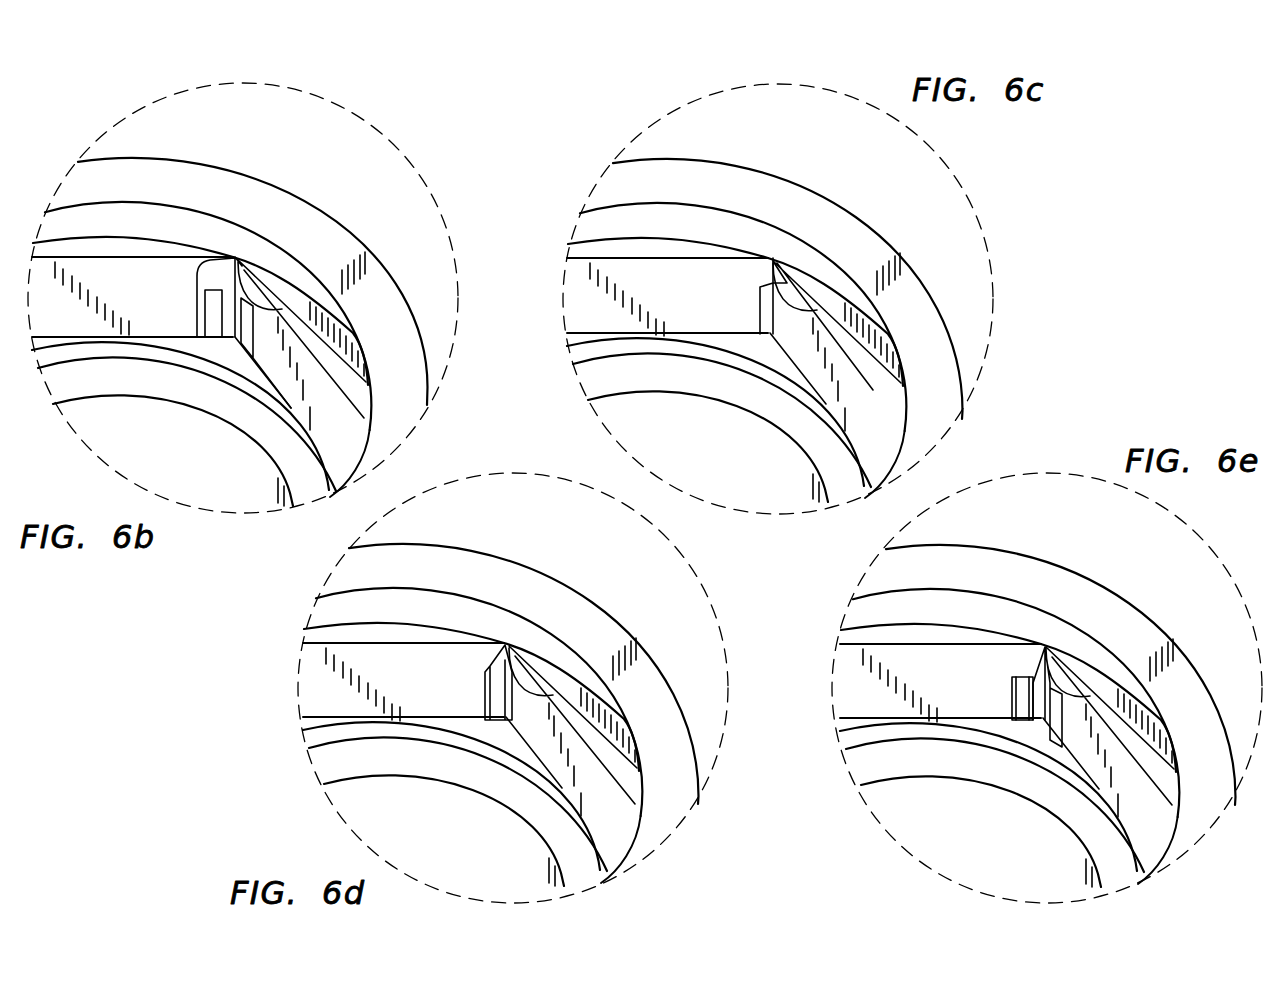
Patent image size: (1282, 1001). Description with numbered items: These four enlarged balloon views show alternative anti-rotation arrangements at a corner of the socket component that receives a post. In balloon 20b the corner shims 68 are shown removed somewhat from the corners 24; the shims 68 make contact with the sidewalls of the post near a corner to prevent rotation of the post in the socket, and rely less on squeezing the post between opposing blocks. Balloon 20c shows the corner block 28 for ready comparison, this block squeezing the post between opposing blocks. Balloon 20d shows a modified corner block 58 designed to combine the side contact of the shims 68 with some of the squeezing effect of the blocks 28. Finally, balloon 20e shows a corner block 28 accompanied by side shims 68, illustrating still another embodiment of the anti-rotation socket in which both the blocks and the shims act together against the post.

In FIG. 6B, the balloon 20b is at (432, 192).
In FIG. 6C, the balloon 20c is at (590, 185).
In FIG. 6D, the balloon 20d is at (706, 592).
In FIG. 6E, the balloon 20e is at (858, 790).
In FIG. 6B, the corners 24 is at (242, 267).
In FIG. 6C, the corners 24 is at (768, 313).
In FIG. 6D, the corners 24 is at (507, 648).
In FIG. 6C, the corner block 28 is at (774, 270).
In FIG. 6D, the modified corner block 58 is at (500, 700).
In FIG. 6B, the corner shims 68 is at (200, 268).